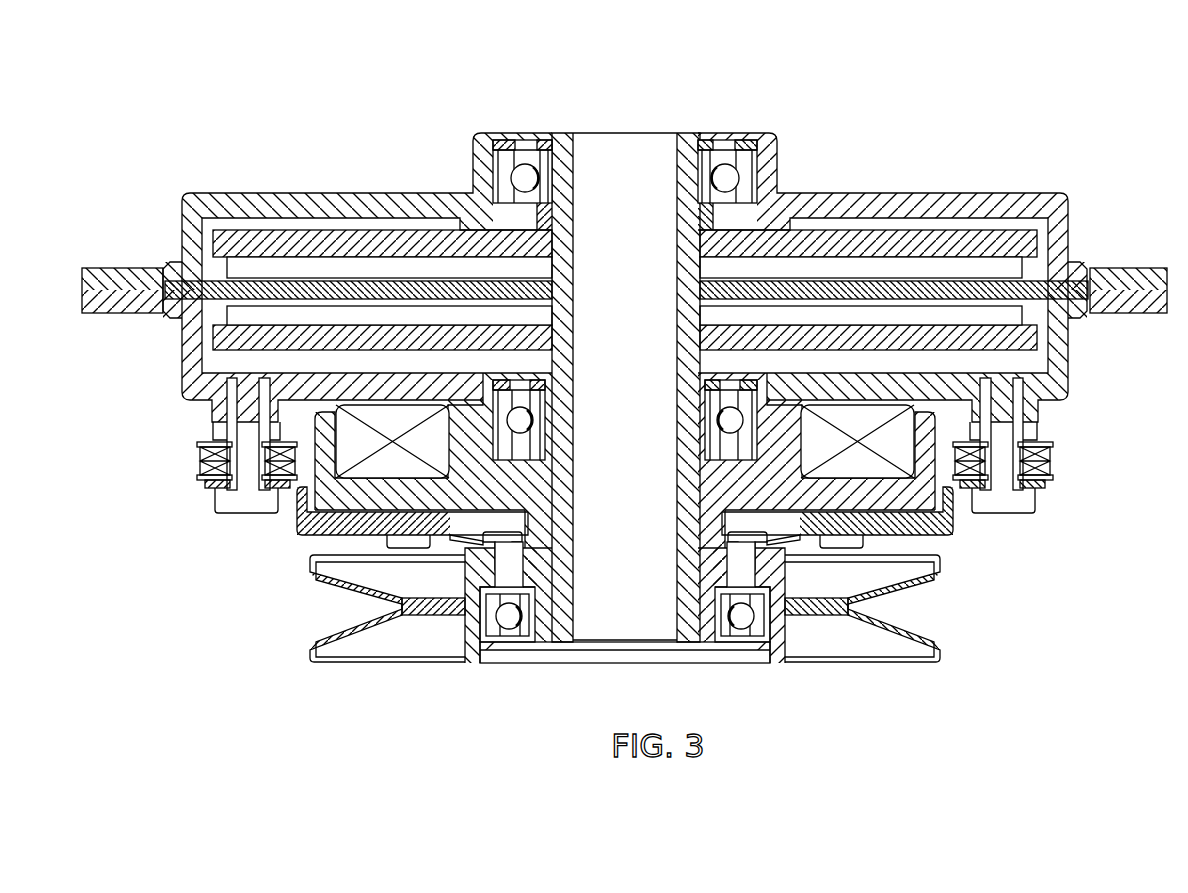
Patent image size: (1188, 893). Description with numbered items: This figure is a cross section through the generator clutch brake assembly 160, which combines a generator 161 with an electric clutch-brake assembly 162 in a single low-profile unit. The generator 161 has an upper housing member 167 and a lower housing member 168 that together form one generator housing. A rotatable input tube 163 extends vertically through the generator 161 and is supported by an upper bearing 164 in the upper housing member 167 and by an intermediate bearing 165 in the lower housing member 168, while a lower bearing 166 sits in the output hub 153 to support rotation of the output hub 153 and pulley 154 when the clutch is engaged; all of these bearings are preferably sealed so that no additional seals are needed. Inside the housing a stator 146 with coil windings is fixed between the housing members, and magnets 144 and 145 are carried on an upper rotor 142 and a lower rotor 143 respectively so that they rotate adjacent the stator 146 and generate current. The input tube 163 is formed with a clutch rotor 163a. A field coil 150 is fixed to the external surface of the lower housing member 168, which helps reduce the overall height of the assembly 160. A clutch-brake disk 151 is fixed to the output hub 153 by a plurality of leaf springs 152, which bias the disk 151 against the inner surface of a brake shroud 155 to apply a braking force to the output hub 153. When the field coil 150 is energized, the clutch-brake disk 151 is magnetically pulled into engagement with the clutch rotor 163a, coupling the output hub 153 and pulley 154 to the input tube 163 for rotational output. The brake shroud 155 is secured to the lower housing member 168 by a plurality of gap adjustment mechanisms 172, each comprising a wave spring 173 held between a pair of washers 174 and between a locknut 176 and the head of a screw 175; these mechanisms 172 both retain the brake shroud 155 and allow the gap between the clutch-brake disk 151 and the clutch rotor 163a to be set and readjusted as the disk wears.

The upper rotor 142 is at (357, 243).
The lower rotor 143 is at (237, 338).
The magnets 144 is at (303, 263).
The magnets 145 is at (237, 317).
The stator 146 is at (252, 290).
The field coil 150 is at (378, 472).
The clutch-brake disk 151 is at (310, 527).
The leaf springs 152 is at (465, 540).
The output hub 153 is at (470, 628).
The pulley 154 is at (805, 645).
The brake shroud 155 is at (952, 523).
The generator clutch brake assembly 160 is at (624, 370).
The generator 161 is at (622, 277).
The electric clutch-brake assembly 162 is at (594, 549).
The input tube 163 is at (565, 175).
The clutch rotor 163a is at (933, 488).
The upper bearing 164 is at (720, 177).
The intermediate bearing 165 is at (722, 421).
The lower bearing 166 is at (737, 617).
The upper housing member 167 is at (1068, 222).
The lower housing member 168 is at (1068, 358).
The gap adjustment mechanisms 172 is at (625, 451).
The wave spring 173 is at (1040, 458).
The washers 174 is at (1040, 445).
The screw 175 is at (1025, 503).
The locknut 176 is at (1025, 432).